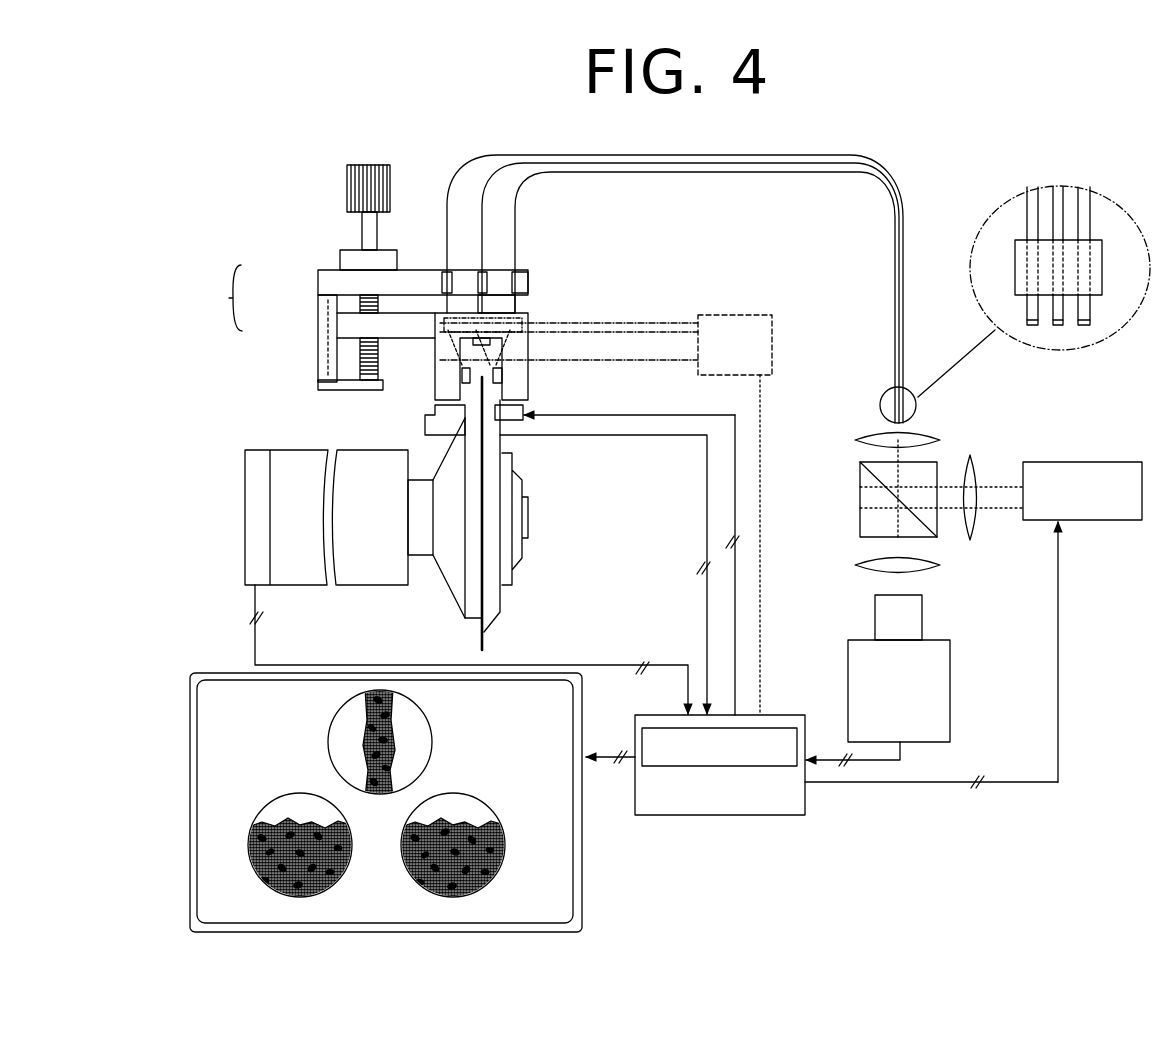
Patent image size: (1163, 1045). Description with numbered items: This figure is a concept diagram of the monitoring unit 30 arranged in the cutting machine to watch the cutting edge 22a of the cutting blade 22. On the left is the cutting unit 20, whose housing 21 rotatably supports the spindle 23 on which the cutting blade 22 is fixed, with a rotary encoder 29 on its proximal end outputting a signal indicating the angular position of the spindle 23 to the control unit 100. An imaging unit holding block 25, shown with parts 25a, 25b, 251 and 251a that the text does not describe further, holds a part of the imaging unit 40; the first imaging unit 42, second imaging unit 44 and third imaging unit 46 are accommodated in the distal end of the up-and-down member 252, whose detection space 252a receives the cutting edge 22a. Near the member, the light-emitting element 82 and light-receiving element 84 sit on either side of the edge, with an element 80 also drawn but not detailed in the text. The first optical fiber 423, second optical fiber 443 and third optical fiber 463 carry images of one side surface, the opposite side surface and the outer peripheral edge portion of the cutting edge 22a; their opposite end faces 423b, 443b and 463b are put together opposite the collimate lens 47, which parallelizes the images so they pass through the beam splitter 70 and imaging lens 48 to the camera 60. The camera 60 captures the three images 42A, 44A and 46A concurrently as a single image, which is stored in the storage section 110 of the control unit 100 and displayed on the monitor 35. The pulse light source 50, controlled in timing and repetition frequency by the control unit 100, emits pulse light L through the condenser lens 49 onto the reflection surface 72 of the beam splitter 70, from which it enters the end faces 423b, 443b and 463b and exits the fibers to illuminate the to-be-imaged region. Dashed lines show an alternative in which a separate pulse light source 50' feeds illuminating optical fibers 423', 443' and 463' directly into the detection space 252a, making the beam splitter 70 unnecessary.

The cutting unit 20 is at (271, 434).
The housing 21 is at (365, 587).
The cutting blade 22 is at (514, 608).
The cutting edge 22a is at (528, 389).
The spindle 23 is at (420, 553).
The imaging unit holding block 25 is at (288, 322).
The upper plate 25a is at (318, 272).
The support column 25b is at (330, 333).
The adjustment knob 251 is at (347, 186).
The knob shaft 251a is at (362, 231).
The up-and-down member 252 is at (492, 310).
The detection space 252a is at (485, 358).
The rotary encoder 29 is at (250, 548).
The monitoring unit 30 is at (910, 183).
The monitor 35 is at (222, 668).
The imaging unit 40 is at (537, 258).
The first imaging unit 42 is at (530, 322).
The image from first optical fiber 42A is at (286, 792).
The second imaging unit 44 is at (446, 330).
The image from second optical fiber 44A is at (485, 798).
The third imaging unit 46 is at (485, 290).
The image from third optical fiber 46A is at (433, 726).
The collimate lens 47 is at (930, 438).
The imaging lens 48 is at (860, 564).
The condenser lens 49 is at (978, 526).
The pulse light source 50 is at (973, 603).
The pulse light source (alternative, dashed) 50' is at (735, 493).
The camera 60 is at (950, 672).
The beam splitter 70 is at (858, 501).
The reflection surface 72 is at (940, 537).
The drive unit 80 is at (593, 443).
The light-emitting element 82 is at (510, 421).
The light-receiving element 84 is at (435, 410).
The control unit 100 is at (740, 816).
The storage section 110 is at (770, 728).
The first optical fiber 423 is at (776, 295).
The opposite end face of first optical fiber 423b is at (1032, 326).
The illuminating optical fiber (alternative, dashed) 423' is at (569, 384).
The second optical fiber 443 is at (767, 289).
The opposite end face of second optical fiber 443b is at (1084, 326).
The illuminating optical fiber (alternative, dashed) 443' is at (569, 298).
The third optical fiber 463 is at (772, 286).
The opposite end face of third optical fiber 463b is at (1058, 326).
The illuminating optical fiber (alternative, dashed) 463' is at (569, 307).
The pulse light L is at (951, 489).